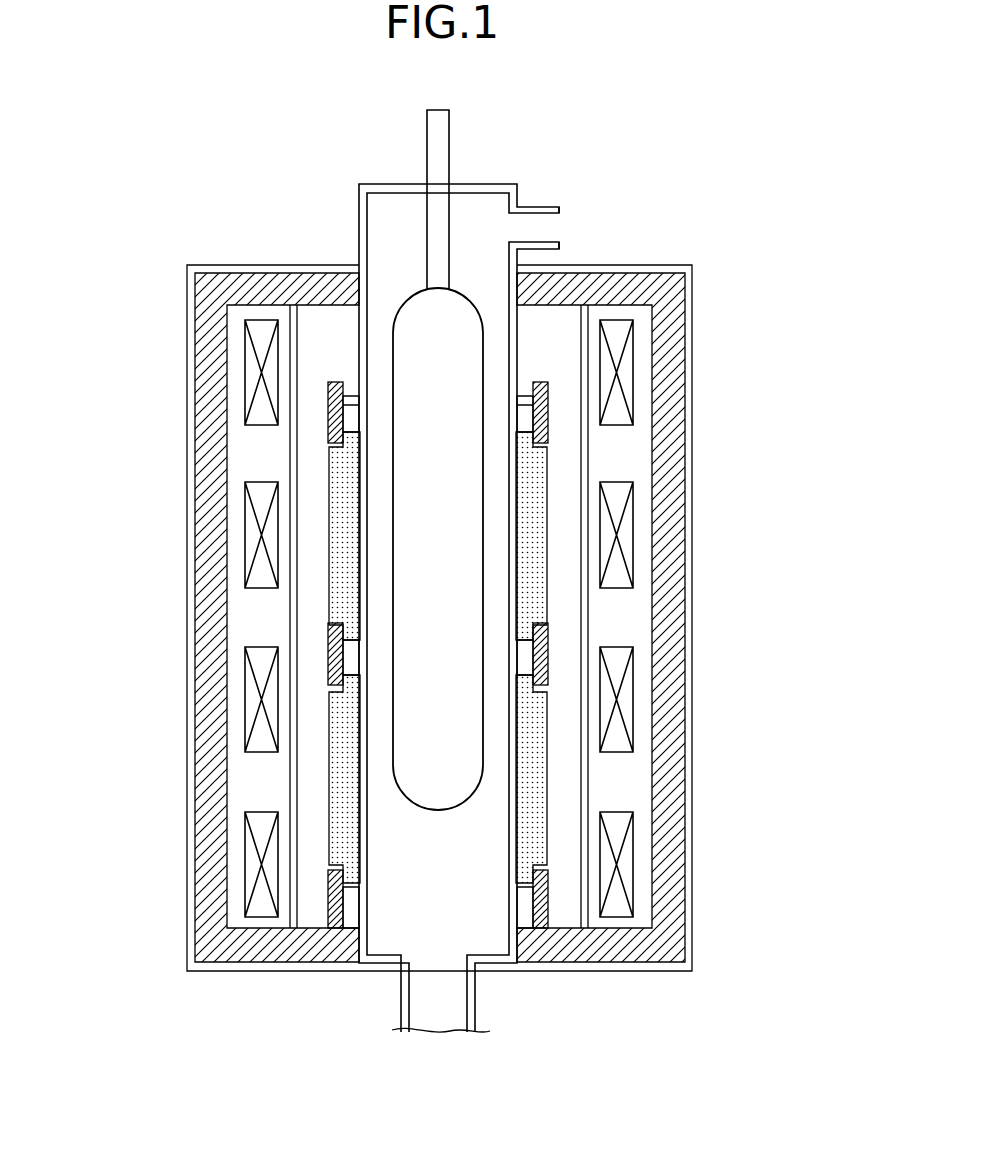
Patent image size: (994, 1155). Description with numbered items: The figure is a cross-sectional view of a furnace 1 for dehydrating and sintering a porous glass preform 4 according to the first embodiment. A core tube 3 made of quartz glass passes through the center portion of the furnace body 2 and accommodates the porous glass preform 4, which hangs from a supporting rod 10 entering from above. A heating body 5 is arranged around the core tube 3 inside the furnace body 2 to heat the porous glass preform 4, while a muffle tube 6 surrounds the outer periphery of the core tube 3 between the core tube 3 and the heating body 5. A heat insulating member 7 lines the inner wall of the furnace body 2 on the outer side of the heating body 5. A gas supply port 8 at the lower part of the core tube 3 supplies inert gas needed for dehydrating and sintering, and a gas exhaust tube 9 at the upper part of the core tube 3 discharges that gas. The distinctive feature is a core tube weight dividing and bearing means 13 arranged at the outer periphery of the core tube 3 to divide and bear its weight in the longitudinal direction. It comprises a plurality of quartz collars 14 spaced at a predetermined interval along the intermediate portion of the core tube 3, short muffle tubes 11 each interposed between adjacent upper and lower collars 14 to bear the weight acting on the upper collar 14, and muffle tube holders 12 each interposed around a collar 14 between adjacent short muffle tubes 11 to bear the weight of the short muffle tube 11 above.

The furnace 1 is at (688, 164).
The furnace body 2 is at (187, 768).
The core tube 3 is at (359, 217).
The porous glass preform 4 is at (463, 295).
The heating body 5 is at (250, 393).
The muffle tube 6 is at (590, 448).
The heat insulating member 7 is at (210, 349).
The gas supply port 8 is at (462, 1000).
The gas exhaust tube 9 is at (543, 241).
The supporting rod 10 is at (427, 136).
The short muffle tube 11 is at (338, 574).
The muffle tube holder 12 is at (328, 659).
The core tube weight dividing and bearing means 13 is at (117, 539).
The collar 14 is at (342, 638).